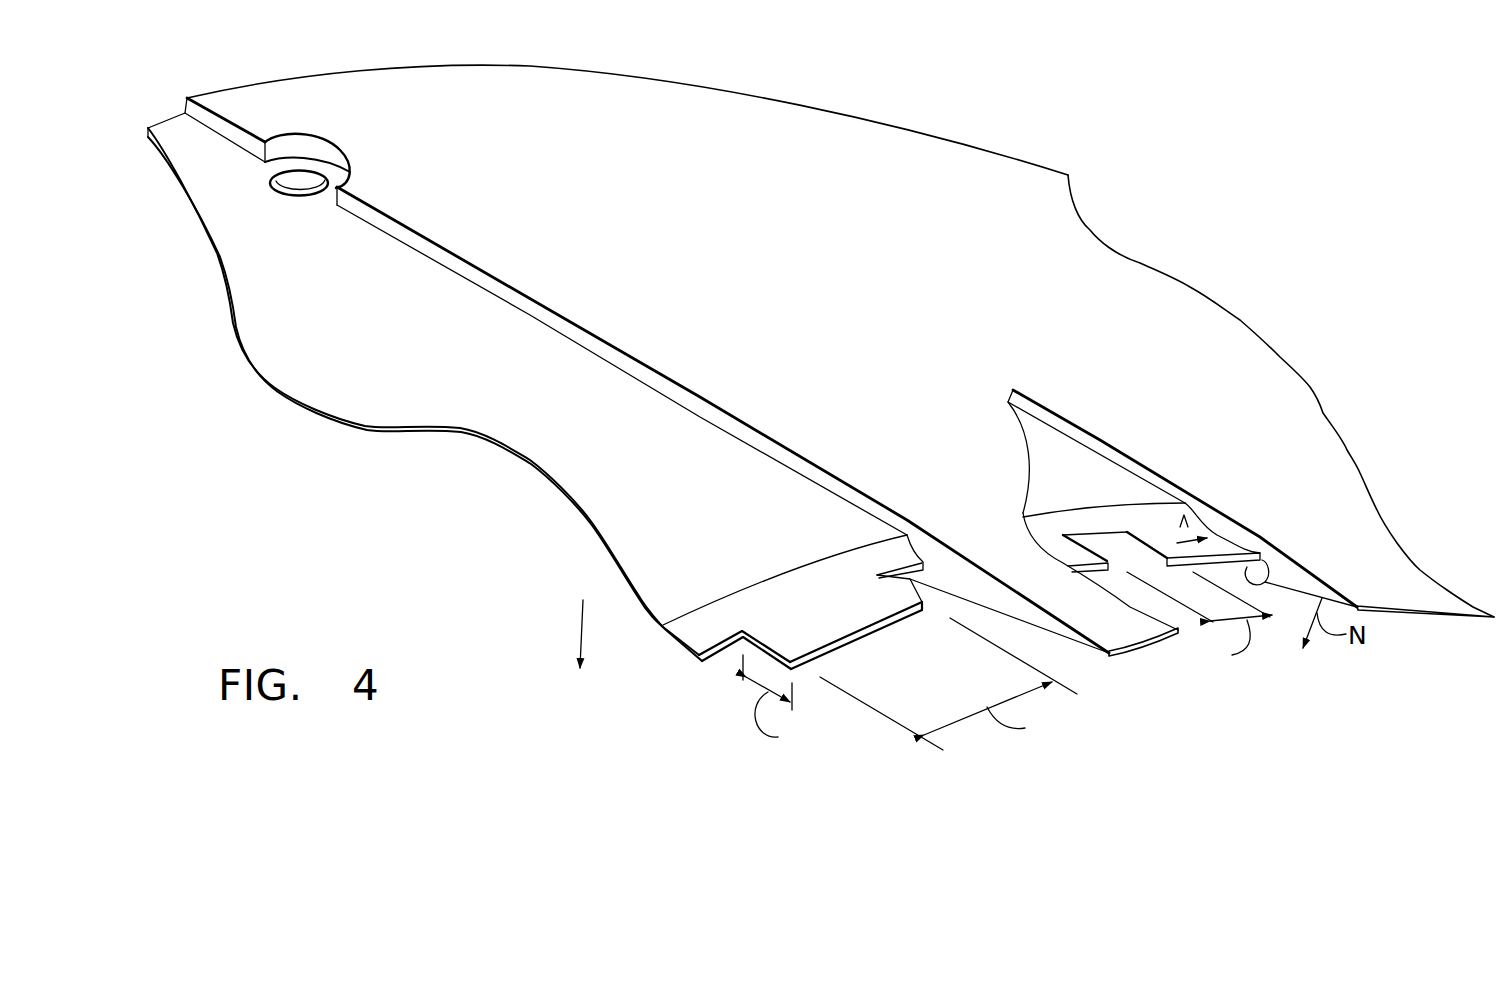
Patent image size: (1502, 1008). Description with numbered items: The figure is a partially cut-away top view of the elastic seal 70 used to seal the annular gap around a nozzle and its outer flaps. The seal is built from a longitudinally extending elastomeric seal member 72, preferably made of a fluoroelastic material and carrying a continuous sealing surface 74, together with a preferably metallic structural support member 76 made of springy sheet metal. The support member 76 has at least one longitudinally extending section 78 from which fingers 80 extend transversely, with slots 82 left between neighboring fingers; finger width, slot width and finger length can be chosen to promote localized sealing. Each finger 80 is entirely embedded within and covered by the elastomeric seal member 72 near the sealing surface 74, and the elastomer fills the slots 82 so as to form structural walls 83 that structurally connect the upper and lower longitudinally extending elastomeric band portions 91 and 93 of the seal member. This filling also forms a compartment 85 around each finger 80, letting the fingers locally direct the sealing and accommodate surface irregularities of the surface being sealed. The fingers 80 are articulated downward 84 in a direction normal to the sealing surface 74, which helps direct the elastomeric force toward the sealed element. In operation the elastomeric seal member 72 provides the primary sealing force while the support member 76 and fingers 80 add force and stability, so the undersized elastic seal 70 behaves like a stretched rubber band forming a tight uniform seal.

The elastic seal 70 is at (1302, 268).
The elastomeric seal member 72 is at (1315, 483).
The continuous sealing surface 74 is at (1060, 640).
The structural support member 76 is at (513, 460).
The longitudinally extending section 78 is at (687, 656).
The fingers 80 is at (822, 643).
The slots 82 is at (740, 672).
The structural walls 83 is at (958, 577).
The downward articulation 84 is at (580, 633).
The compartment 85 is at (1178, 537).
The upper longitudinally extending elastomeric band portion 91 is at (1220, 523).
The lower longitudinally extending elastomeric band portion 93 is at (1252, 572).